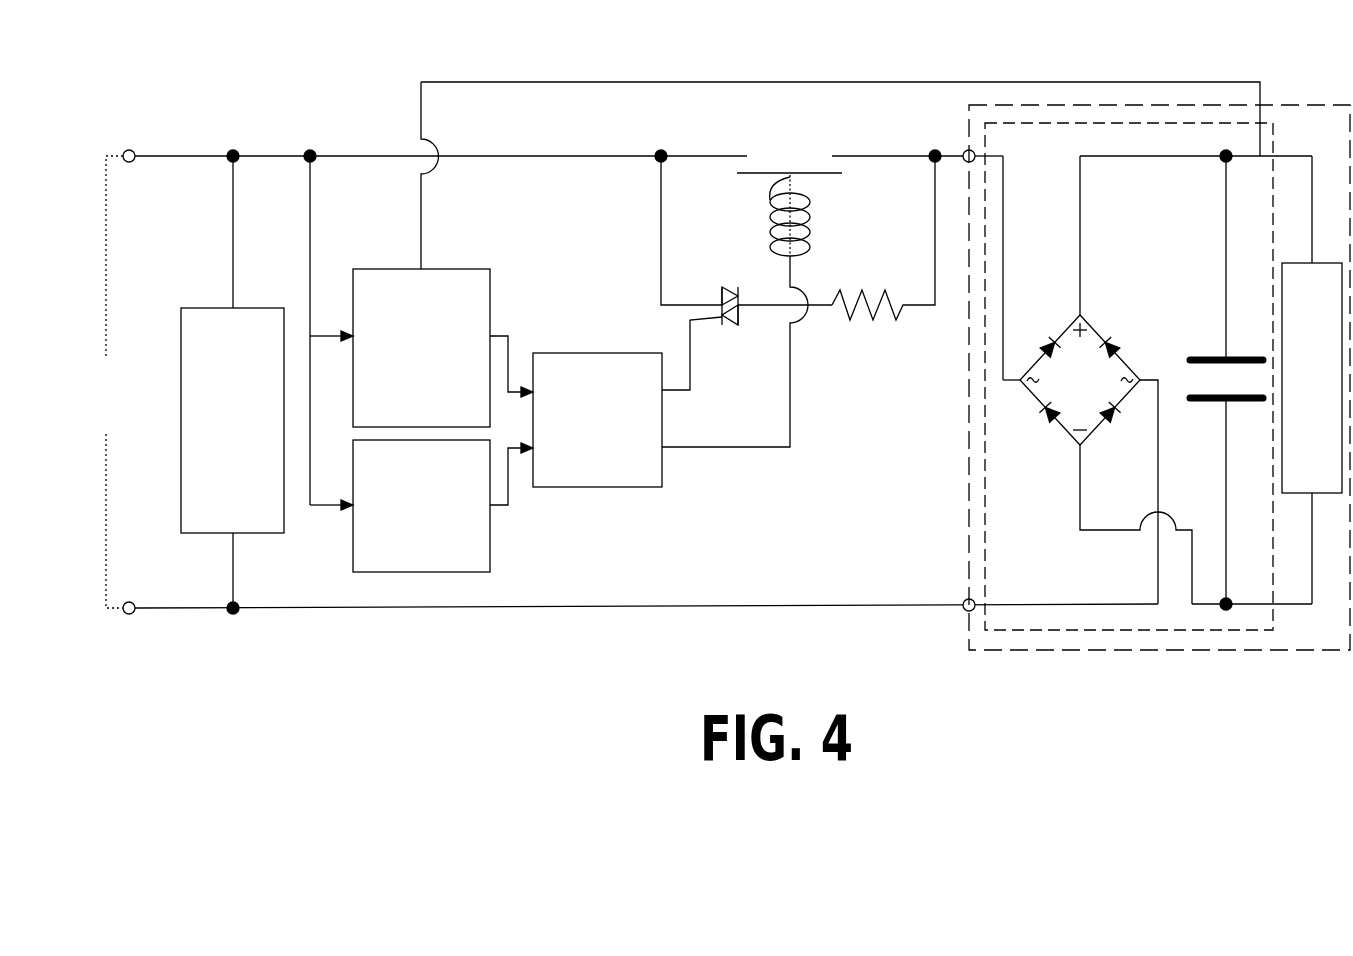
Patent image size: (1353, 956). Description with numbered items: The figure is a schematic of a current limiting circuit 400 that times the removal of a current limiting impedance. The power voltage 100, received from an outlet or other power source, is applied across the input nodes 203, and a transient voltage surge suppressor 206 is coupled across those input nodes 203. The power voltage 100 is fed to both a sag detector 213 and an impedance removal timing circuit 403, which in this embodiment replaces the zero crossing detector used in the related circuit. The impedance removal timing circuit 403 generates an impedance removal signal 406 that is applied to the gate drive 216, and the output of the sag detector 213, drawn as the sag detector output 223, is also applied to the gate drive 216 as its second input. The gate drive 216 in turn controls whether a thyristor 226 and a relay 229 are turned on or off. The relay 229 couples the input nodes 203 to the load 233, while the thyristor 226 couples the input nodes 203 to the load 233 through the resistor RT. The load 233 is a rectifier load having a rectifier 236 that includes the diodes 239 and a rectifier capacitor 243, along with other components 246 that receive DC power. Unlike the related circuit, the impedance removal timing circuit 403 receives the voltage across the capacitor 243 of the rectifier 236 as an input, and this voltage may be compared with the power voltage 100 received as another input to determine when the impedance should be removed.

The current limiting circuit 400 is at (308, 54).
The input nodes 203 is at (130, 150).
The power voltage 100 is at (91, 429).
The transient voltage surge suppressor 206 is at (232, 420).
The impedance removal timing circuit 403 is at (403, 419).
The sag detector 213 is at (403, 547).
The gate drive 216 is at (579, 449).
The impedance removal signal 406 is at (510, 336).
The sag detector output signal 223 is at (508, 508).
The thyristor 226 is at (730, 287).
The relay 229 is at (829, 214).
The load 233 is at (1054, 105).
The rectifier 236 is at (1143, 123).
The diodes 239 is at (1119, 314).
The rectifier capacitor 243 is at (1198, 427).
The other components 246 is at (1292, 392).